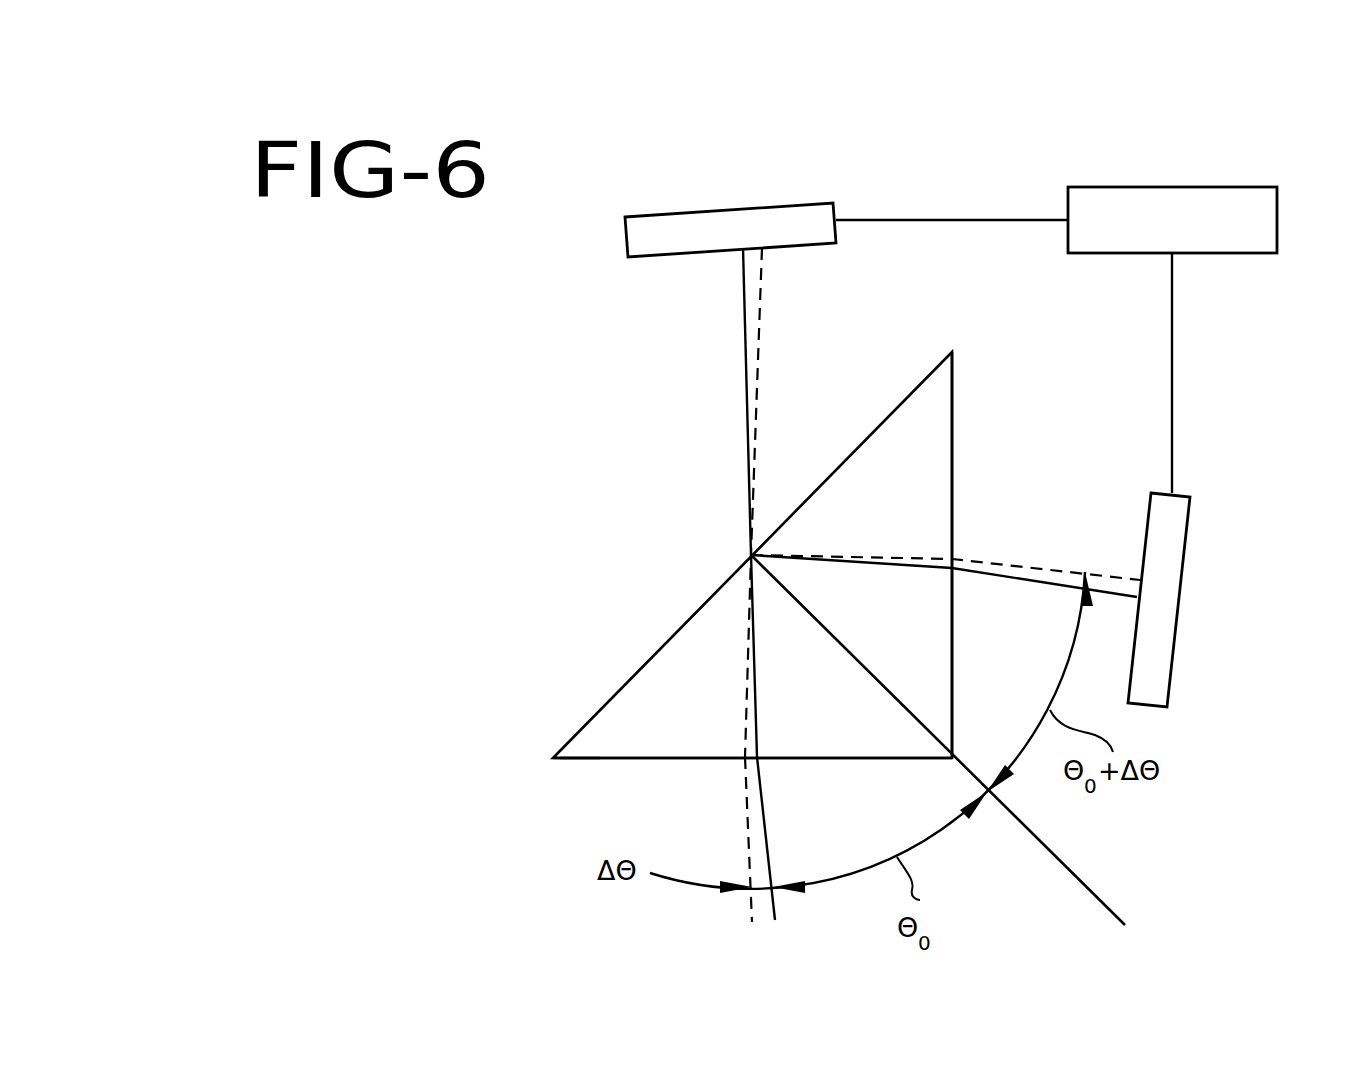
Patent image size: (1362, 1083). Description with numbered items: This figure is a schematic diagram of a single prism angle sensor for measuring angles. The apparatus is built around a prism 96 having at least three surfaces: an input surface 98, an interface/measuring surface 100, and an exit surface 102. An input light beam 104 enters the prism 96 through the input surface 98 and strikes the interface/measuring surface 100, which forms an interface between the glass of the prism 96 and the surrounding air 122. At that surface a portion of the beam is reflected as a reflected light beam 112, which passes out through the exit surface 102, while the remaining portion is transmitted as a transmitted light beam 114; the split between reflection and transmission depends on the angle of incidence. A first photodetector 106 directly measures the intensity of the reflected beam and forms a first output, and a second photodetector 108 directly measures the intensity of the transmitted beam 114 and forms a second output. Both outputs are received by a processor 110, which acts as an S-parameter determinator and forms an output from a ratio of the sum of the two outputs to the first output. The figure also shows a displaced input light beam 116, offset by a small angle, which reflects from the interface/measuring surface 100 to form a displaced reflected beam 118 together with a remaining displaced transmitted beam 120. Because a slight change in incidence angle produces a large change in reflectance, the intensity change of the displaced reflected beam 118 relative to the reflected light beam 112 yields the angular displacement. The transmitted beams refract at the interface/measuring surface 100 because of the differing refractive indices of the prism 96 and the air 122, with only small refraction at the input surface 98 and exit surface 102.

The prism 96 is at (558, 760).
The input surface 98 is at (597, 763).
The interface/measuring surface 100 is at (585, 720).
The exit surface 102 is at (952, 397).
The input light beam 104 is at (777, 910).
The first photodetector 106 is at (1178, 600).
The second photodetector 108 is at (625, 237).
The processor 110 is at (1240, 253).
The reflected light beam 112 is at (1034, 578).
The transmitted light beam 114 is at (745, 323).
The displaced input light beam 116 is at (750, 910).
The displaced reflected beam 118 is at (1033, 562).
The displaced transmitted beam 120 is at (762, 305).
The air 122 is at (526, 589).